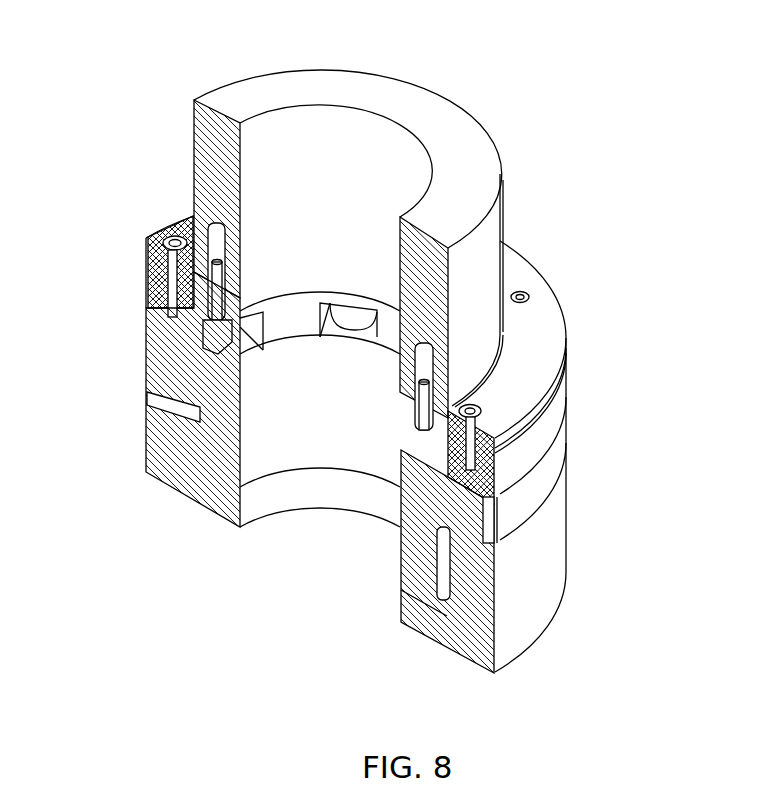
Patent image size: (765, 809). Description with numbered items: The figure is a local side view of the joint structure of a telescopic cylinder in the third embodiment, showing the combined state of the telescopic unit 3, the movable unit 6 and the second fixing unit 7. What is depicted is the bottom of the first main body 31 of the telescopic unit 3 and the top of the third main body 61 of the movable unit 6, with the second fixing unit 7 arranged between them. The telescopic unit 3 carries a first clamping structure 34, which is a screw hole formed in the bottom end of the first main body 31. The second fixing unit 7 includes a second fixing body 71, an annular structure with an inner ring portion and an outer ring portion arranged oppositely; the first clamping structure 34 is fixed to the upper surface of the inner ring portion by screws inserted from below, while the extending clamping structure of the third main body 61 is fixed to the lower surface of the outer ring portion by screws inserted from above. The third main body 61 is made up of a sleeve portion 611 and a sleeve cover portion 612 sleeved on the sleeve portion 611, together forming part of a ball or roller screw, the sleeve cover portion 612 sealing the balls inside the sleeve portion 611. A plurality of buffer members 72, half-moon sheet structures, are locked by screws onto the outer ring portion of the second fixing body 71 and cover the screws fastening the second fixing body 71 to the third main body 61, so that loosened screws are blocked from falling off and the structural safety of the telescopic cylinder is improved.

The telescopic unit 3 is at (172, 150).
The first main body 31 is at (480, 251).
The first clamping structure 34 is at (423, 367).
The buffer member 72 is at (517, 270).
The second fixing unit 7 is at (132, 240).
The movable unit 6 is at (132, 360).
The third main body 61 is at (645, 550).
The sleeve portion 611 is at (463, 620).
The sleeve cover portion 612 is at (457, 508).
The second fixing body 71 is at (513, 463).